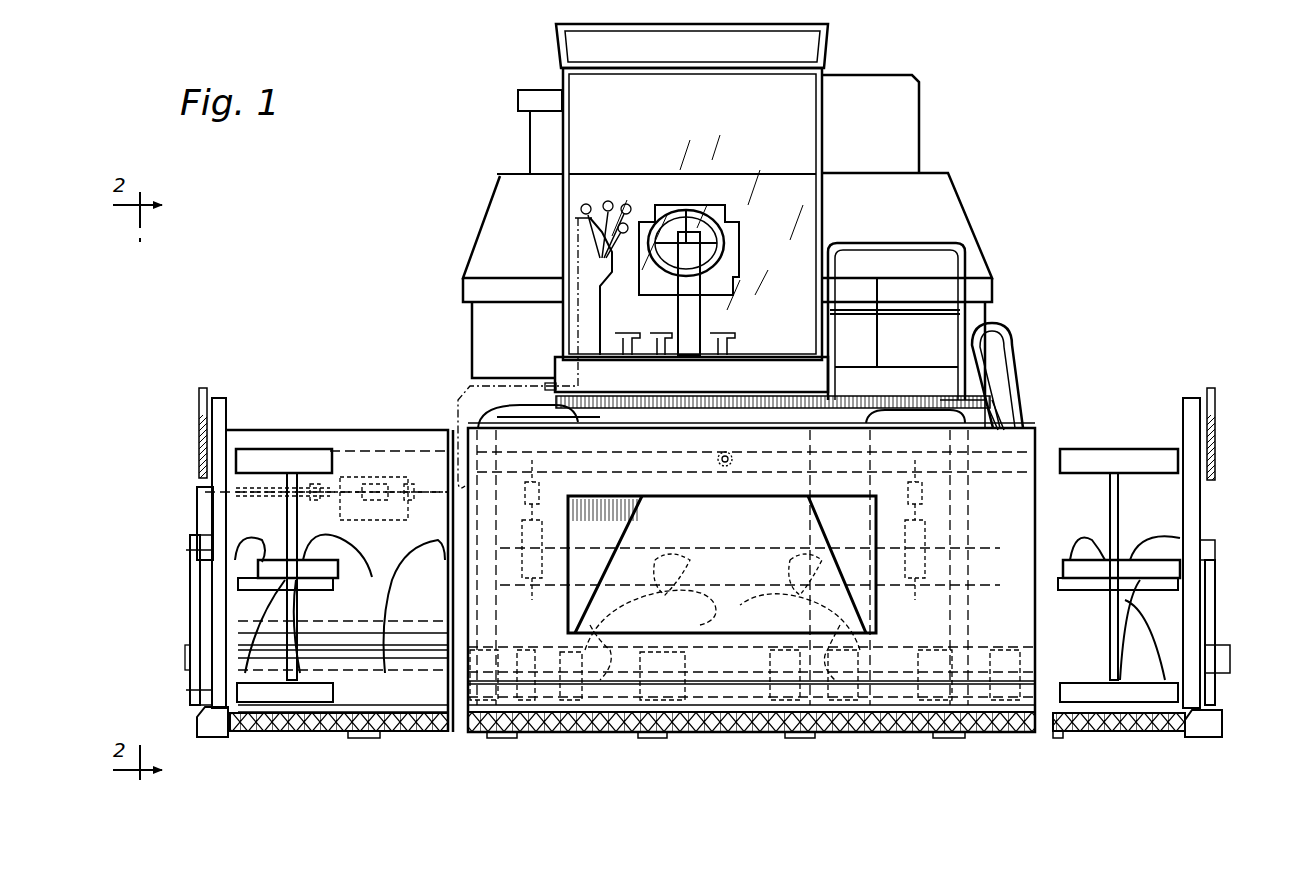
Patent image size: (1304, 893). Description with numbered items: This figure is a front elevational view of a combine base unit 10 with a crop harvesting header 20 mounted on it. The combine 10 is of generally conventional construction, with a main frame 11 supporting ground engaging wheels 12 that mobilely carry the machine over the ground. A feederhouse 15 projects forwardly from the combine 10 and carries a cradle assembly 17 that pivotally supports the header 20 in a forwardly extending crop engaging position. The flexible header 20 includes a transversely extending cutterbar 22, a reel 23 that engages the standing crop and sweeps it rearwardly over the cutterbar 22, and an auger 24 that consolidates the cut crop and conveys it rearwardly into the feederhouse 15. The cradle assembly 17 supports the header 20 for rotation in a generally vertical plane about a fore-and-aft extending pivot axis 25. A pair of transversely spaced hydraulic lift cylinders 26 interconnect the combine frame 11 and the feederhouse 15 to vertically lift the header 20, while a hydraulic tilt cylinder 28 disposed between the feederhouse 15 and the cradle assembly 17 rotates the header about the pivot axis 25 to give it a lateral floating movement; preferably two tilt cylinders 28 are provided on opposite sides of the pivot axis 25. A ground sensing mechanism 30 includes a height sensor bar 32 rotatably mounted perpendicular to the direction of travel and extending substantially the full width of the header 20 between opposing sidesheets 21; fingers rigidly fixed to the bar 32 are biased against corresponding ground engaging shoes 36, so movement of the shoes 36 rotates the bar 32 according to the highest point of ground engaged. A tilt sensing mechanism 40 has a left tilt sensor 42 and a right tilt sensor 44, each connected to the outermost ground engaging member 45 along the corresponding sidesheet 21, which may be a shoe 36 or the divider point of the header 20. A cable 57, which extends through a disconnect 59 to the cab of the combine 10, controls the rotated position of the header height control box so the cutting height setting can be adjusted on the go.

The combine base unit 10 is at (1032, 114).
The main frame 11 is at (685, 555).
The ground engaging wheels 12 is at (968, 422).
The feederhouse 15 is at (625, 413).
The cradle assembly 17 is at (1015, 432).
The crop harvesting header 20 is at (300, 376).
The sidesheets 21 is at (228, 443).
The cutterbar 22 is at (710, 735).
The reel 23 is at (307, 450).
The auger 24 is at (355, 565).
The pivot axis 25 is at (730, 455).
The hydraulic lift cylinders 26 is at (690, 612).
The hydraulic tilt cylinder 28 is at (545, 543).
The ground sensing mechanism 30 is at (184, 525).
The height sensor bar 32 is at (592, 737).
The ground engaging shoe 36 is at (370, 738).
The tilt sensing mechanism 40 is at (255, 742).
The left tilt sensor 42 is at (1220, 622).
The right tilt sensor 44 is at (190, 615).
The outermost ground engaging member 45 is at (210, 738).
The cable 57 is at (237, 497).
The disconnect 59 is at (375, 478).